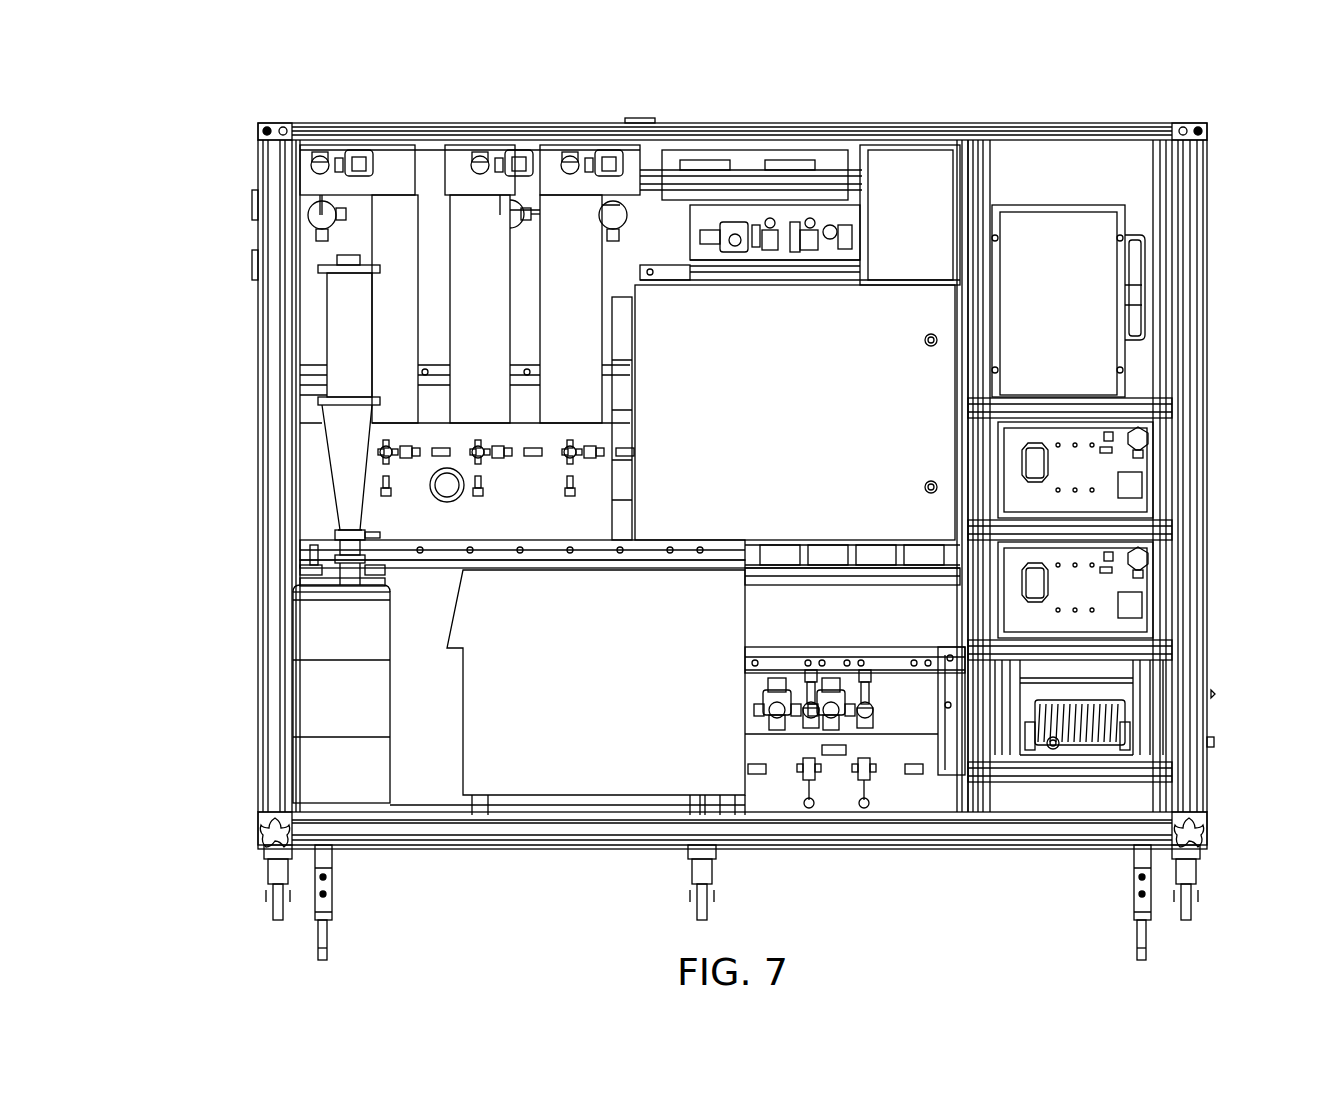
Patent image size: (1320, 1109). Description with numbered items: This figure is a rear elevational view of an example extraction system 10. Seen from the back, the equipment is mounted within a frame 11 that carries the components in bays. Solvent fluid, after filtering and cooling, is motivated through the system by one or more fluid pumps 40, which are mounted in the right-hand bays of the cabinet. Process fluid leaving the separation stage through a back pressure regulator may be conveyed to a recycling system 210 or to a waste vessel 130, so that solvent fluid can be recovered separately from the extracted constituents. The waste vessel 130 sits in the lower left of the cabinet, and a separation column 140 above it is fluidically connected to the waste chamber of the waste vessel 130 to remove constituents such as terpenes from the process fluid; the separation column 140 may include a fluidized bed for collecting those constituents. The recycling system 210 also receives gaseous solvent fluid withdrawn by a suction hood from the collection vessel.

The extraction system 10 is at (213, 92).
The frame 11 is at (1214, 742).
The fluid pump 40 is at (1148, 453).
The waste vessel 130 is at (292, 682).
The separation column 140 is at (327, 318).
The recycling system 210 is at (527, 203).